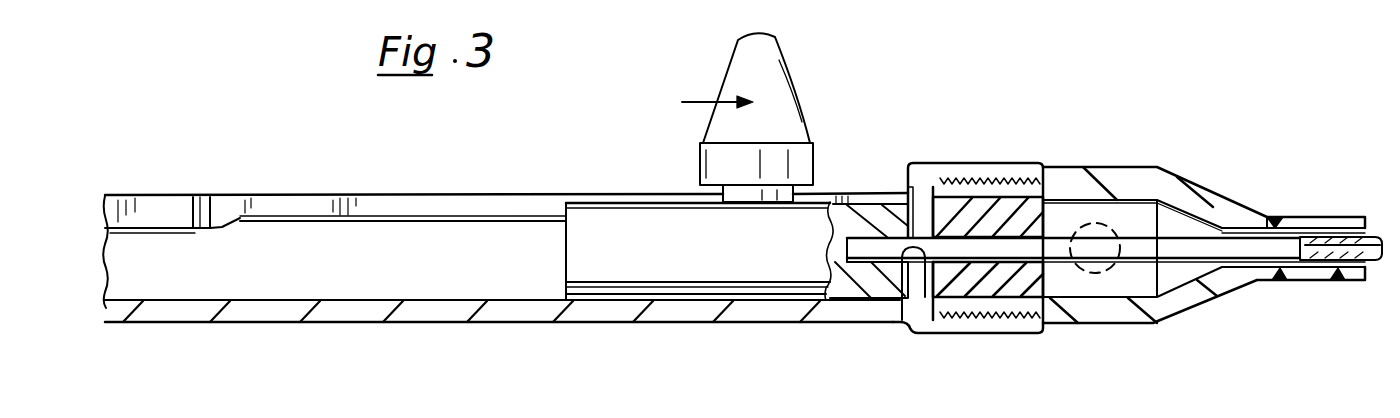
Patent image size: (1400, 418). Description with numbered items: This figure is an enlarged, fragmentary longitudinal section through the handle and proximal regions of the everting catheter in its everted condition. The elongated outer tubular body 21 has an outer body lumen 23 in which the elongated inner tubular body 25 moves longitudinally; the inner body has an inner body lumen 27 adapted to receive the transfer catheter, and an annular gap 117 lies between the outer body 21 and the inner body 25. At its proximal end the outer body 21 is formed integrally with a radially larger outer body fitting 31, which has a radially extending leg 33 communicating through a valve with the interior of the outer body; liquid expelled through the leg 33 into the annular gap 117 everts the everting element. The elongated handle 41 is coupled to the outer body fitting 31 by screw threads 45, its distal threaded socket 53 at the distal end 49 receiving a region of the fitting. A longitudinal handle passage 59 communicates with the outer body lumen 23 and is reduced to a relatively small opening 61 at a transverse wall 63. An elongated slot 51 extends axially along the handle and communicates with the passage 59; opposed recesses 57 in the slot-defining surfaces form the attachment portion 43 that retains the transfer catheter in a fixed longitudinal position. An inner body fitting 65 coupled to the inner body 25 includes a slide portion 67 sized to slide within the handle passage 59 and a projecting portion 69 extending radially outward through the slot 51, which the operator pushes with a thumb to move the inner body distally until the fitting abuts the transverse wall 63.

The outer tubular body 21 is at (1333, 220).
The outer body lumen 23 is at (1356, 264).
The inner tubular body 25 is at (1280, 248).
The inner body lumen 27 is at (1322, 245).
The outer body fitting 31 is at (1125, 313).
The radially extending leg 33 is at (1110, 272).
The elongated handle 41 is at (487, 322).
The attachment portion 43 is at (239, 192).
The screw threads 45 is at (977, 318).
The distal end 49 is at (1047, 167).
The elongated slot 51 is at (406, 205).
The distal threaded socket 53 is at (1012, 166).
The opposed recesses 57 is at (225, 200).
The handle passage 59 is at (276, 265).
The small opening 61 is at (894, 297).
The transverse wall 63 is at (920, 220).
The inner body fitting 65 is at (605, 236).
The slide portion 67 is at (670, 272).
The projecting portion 69 is at (752, 62).
The annular gap 117 is at (1232, 228).